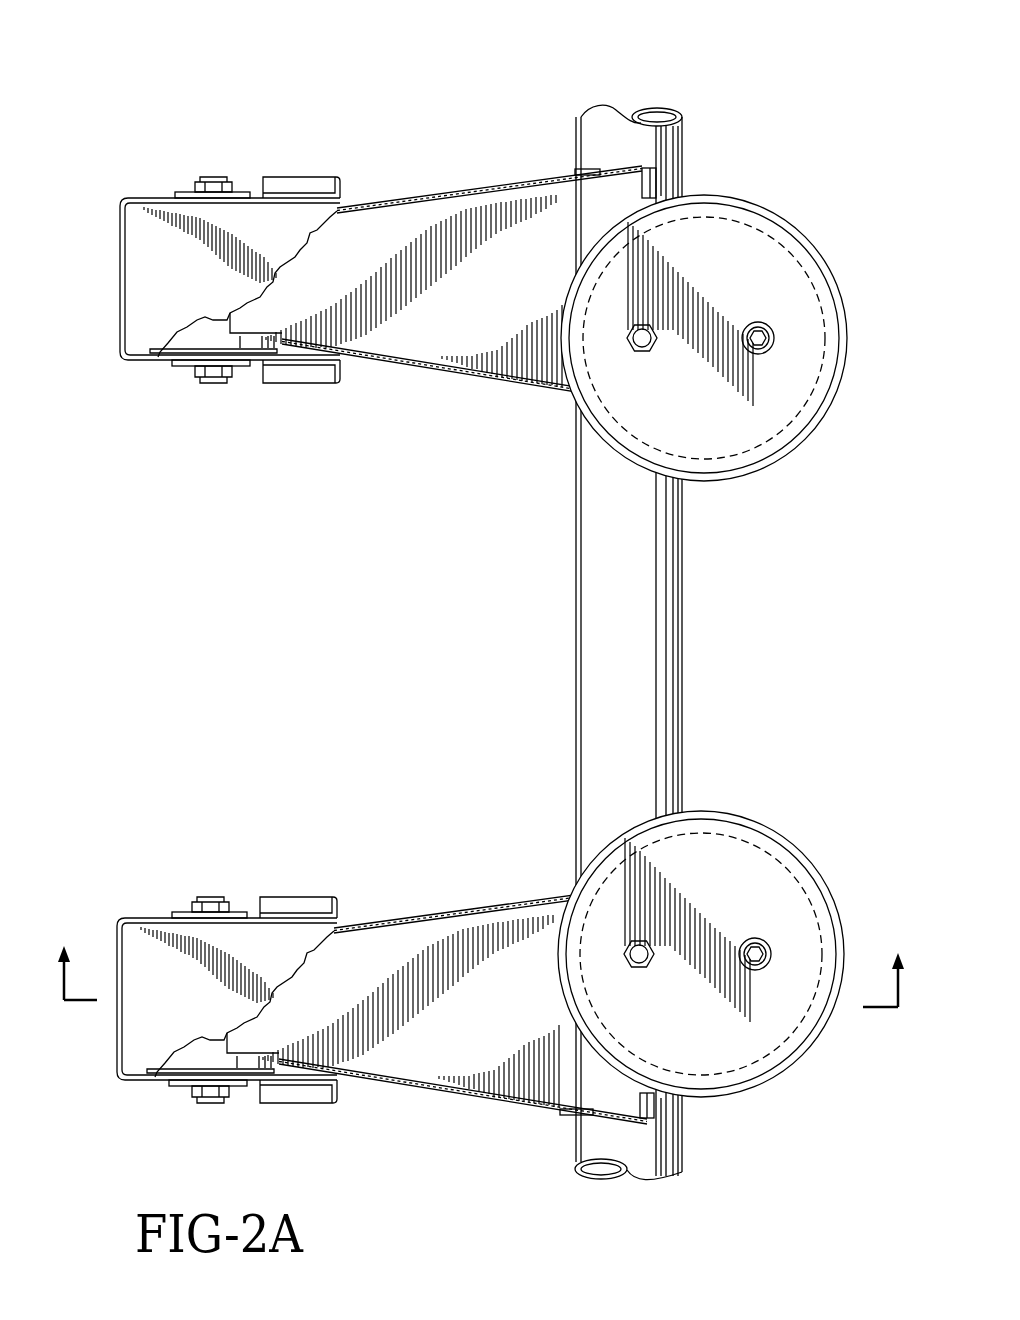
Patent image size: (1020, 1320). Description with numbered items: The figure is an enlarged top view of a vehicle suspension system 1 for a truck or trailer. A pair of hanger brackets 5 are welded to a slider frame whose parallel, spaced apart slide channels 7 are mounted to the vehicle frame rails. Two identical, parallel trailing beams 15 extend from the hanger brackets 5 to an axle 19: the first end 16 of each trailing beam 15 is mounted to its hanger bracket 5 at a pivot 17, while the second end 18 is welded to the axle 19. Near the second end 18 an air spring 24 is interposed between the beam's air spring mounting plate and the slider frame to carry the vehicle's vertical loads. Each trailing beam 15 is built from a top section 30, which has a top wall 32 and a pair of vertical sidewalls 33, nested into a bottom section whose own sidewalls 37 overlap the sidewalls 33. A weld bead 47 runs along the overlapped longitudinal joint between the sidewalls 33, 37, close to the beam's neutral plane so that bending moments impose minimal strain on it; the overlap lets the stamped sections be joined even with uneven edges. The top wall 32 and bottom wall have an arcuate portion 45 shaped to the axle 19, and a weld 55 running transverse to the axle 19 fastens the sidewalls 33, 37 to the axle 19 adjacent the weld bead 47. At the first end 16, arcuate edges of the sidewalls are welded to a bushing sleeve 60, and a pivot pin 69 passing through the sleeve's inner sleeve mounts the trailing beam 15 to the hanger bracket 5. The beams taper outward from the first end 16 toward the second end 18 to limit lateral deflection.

The suspension system 1 is at (719, 37).
The hanger bracket 5 is at (120, 285).
The slide channel 7 is at (482, 964).
The trailing beam 15 is at (373, 363).
The first end 16 is at (266, 322).
The pivot 17 is at (192, 190).
The second end 18 is at (651, 180).
The axle 19 is at (583, 718).
The air spring 24 is at (772, 213).
The top section 30 is at (420, 356).
The top wall 32 is at (392, 225).
The sidewall 33 is at (466, 195).
The sidewall 37 is at (513, 188).
The arcuate portion 45 is at (665, 180).
The weld bead 47 is at (427, 200).
The weld 55 is at (585, 171).
The bushing sleeve 60 is at (205, 335).
The pivot pin 69 is at (212, 180).